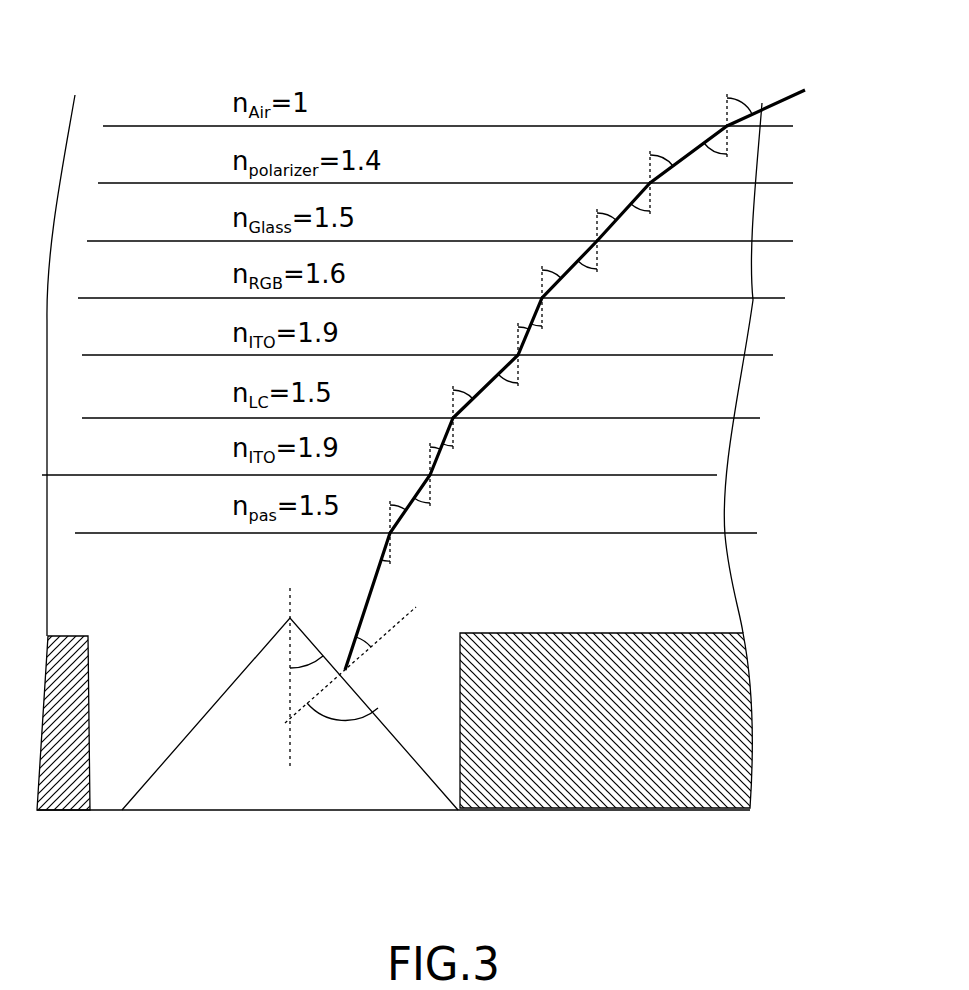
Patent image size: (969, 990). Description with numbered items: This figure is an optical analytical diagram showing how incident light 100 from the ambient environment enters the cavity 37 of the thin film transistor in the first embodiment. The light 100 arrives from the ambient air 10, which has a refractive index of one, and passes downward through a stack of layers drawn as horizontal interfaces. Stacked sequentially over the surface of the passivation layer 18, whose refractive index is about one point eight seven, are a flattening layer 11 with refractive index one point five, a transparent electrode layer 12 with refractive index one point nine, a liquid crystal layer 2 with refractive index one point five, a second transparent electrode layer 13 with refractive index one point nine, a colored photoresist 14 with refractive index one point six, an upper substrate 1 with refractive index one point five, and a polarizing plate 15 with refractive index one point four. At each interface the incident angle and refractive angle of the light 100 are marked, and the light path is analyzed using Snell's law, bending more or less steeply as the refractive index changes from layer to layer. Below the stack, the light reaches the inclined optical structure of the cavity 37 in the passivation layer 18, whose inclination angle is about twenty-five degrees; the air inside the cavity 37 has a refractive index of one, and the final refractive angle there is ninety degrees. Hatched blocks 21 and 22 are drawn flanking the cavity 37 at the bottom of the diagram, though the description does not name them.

The incident light 100 is at (763, 95).
The ambient air 10 is at (762, 110).
The polarizing plate 15 is at (750, 163).
The upper substrate 1 is at (755, 218).
The colored photoresist 14 is at (752, 272).
The transparent electrode layer 13 is at (728, 332).
The liquid crystal layer 2 is at (722, 397).
The transparent electrode layer 12 is at (710, 445).
The flattening layer 11 is at (703, 503).
The passivation layer 18 is at (730, 598).
The metal line 21 is at (65, 812).
The reflective electrode 22 is at (627, 765).
The cavity 37 is at (237, 778).